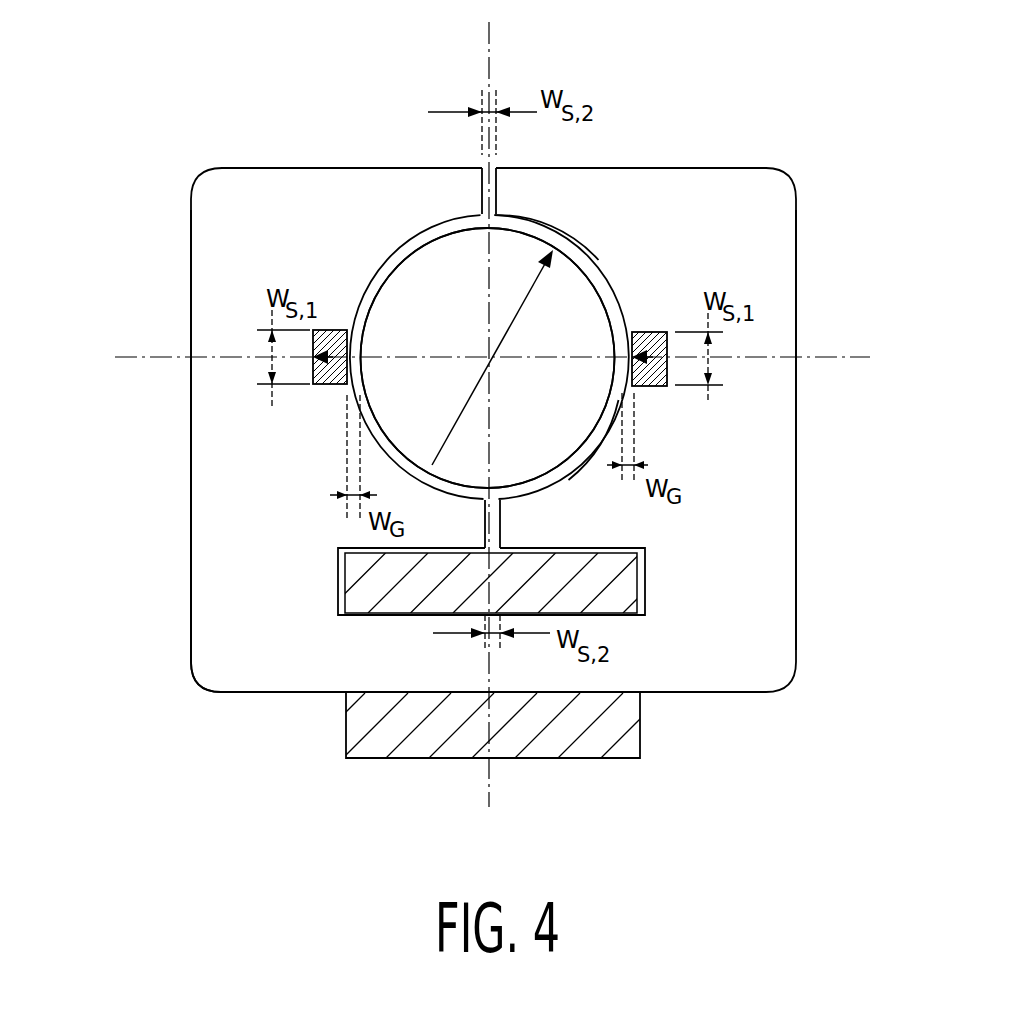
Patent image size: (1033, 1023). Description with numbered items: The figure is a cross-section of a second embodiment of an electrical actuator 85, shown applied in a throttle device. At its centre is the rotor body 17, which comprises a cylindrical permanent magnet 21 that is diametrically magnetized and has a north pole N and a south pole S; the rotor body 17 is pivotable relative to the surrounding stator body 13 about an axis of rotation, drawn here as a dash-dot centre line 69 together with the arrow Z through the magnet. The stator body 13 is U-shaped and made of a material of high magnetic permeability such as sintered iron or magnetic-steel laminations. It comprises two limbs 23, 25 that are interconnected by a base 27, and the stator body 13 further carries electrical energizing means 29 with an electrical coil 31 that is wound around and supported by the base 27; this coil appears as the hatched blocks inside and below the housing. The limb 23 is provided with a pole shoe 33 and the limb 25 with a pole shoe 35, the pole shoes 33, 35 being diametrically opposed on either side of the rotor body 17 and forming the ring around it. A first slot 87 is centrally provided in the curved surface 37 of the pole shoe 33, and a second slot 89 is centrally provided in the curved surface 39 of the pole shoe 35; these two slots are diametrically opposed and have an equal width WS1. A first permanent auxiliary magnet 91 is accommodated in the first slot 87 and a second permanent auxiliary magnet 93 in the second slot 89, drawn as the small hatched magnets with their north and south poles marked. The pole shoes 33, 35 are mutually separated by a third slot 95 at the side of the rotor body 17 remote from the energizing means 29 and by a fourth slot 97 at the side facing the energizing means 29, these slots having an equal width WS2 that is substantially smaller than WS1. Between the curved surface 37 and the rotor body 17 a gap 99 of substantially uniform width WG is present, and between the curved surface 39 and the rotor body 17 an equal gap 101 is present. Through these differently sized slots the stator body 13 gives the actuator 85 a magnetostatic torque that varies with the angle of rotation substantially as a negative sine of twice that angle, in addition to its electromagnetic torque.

The stator body 13 is at (758, 525).
The rotor body 17 is at (622, 358).
The permanent magnet 21 is at (560, 438).
The limb 23 is at (208, 396).
The limb 25 is at (743, 348).
The base 27 is at (390, 652).
The electrical energizing means 29 is at (536, 725).
The electrical coil 31 is at (640, 726).
The pole shoe 33 is at (380, 238).
The pole shoe 35 is at (677, 288).
The curved surface 37 is at (363, 280).
The curved surface 39 is at (623, 419).
The axis 69 is at (489, 43).
The electrical actuator 85 is at (130, 660).
The first slot 87 is at (313, 384).
The second slot 89 is at (636, 332).
The first permanent auxiliary magnet 91 is at (335, 384).
The second permanent auxiliary magnet 93 is at (653, 332).
The third slot 95 is at (482, 183).
The fourth slot 97 is at (492, 529).
The gap 99 is at (377, 262).
The gap 101 is at (577, 252).